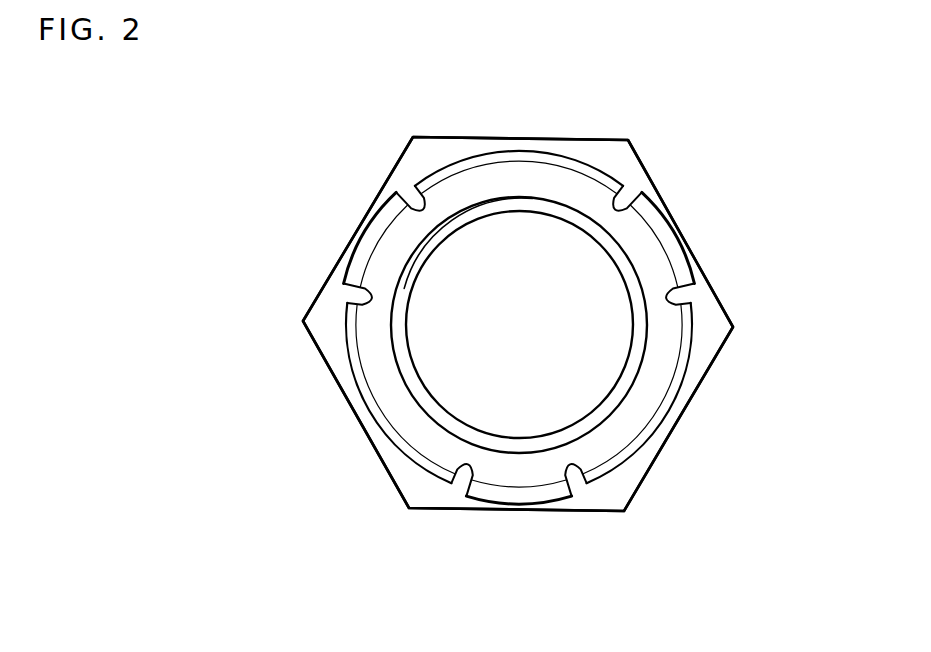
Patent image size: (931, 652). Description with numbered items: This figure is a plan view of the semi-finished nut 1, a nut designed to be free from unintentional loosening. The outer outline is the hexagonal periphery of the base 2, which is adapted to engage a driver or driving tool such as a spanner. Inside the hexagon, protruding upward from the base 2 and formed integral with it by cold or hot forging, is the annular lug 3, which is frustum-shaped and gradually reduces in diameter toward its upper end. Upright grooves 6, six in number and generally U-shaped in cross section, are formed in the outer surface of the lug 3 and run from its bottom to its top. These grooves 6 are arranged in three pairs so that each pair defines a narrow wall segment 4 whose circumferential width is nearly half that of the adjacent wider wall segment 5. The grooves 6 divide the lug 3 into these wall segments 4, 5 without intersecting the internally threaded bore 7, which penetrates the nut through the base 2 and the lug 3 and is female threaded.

The nut 1 is at (606, 128).
The base 2 is at (385, 494).
The annular lug 3 is at (710, 342).
The wall segment 4 is at (666, 222).
The wall segment 5 is at (536, 152).
The groove 6 is at (414, 196).
The bore 7 is at (610, 394).